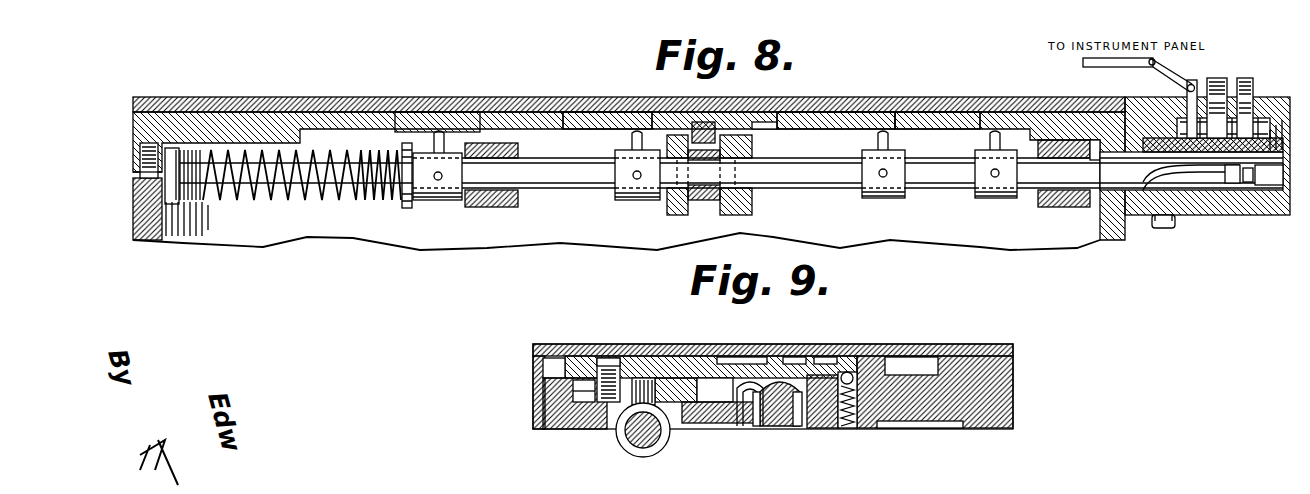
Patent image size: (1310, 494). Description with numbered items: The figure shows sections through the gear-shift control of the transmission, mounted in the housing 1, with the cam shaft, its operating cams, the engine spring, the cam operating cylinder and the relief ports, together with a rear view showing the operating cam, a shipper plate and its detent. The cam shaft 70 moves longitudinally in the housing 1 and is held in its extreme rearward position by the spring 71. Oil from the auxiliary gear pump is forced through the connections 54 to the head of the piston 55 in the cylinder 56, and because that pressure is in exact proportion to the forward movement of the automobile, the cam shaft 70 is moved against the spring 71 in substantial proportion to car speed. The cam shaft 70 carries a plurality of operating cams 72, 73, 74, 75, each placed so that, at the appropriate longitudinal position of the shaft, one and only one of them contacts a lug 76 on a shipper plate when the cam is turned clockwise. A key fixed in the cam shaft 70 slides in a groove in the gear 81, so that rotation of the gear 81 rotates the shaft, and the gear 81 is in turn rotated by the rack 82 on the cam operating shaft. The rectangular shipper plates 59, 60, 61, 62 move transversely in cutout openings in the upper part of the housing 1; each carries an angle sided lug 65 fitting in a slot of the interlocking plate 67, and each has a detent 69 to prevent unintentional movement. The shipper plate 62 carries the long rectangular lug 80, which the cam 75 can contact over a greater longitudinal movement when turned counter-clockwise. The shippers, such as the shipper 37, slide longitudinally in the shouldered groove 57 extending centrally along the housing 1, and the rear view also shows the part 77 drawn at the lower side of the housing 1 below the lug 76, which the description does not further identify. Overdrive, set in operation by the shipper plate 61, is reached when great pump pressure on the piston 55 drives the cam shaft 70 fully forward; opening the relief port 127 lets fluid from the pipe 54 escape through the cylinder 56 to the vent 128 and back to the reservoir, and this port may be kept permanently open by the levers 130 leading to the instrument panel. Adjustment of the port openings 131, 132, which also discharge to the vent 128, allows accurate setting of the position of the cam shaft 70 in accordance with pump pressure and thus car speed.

In FIG. 8, the housing 1 is at (512, 112).
In FIG. 9, the housing 1 is at (1013, 390).
In FIG. 8, the shipper plate 59 is at (424, 118).
In FIG. 8, the shipper plate 60 is at (590, 112).
In FIG. 8, the shipper plate 61 is at (816, 113).
In FIG. 8, the shipper plate 62 is at (926, 113).
In FIG. 8, the cam shaft 70 is at (838, 175).
In FIG. 8, the spring 71 is at (257, 202).
In FIG. 8, the operating cam 72 is at (437, 203).
In FIG. 8, the operating cam 73 is at (637, 202).
In FIG. 8, the operating cam 74 is at (873, 200).
In FIG. 8, the operating cam 75 is at (992, 199).
In FIG. 8, the gear 81 is at (703, 206).
In FIG. 8, the rack 82 is at (703, 122).
In FIG. 8, the connections 54 is at (1282, 215).
In FIG. 8, the piston 55 is at (1258, 215).
In FIG. 8, the cylinder 56 is at (1210, 190).
In FIG. 8, the relief port 127 is at (1130, 192).
In FIG. 8, the vent 128 is at (1270, 97).
In FIG. 8, the levers 130 is at (1155, 68).
In FIG. 8, the port opening 131 is at (1200, 185).
In FIG. 8, the port opening 132 is at (1218, 180).
In FIG. 9, the angle sided lug 65 is at (784, 362).
In FIG. 9, the interlocking plate 67 is at (740, 362).
In FIG. 9, the lug 76 is at (688, 398).
In FIG. 9, the pivot pin 77 is at (648, 396).
In FIG. 9, the lug 80 is at (563, 398).
In FIG. 9, the shouldered groove 57 is at (760, 426).
In FIG. 9, the shipper 37 is at (785, 428).
In FIG. 9, the detent 69 is at (842, 428).